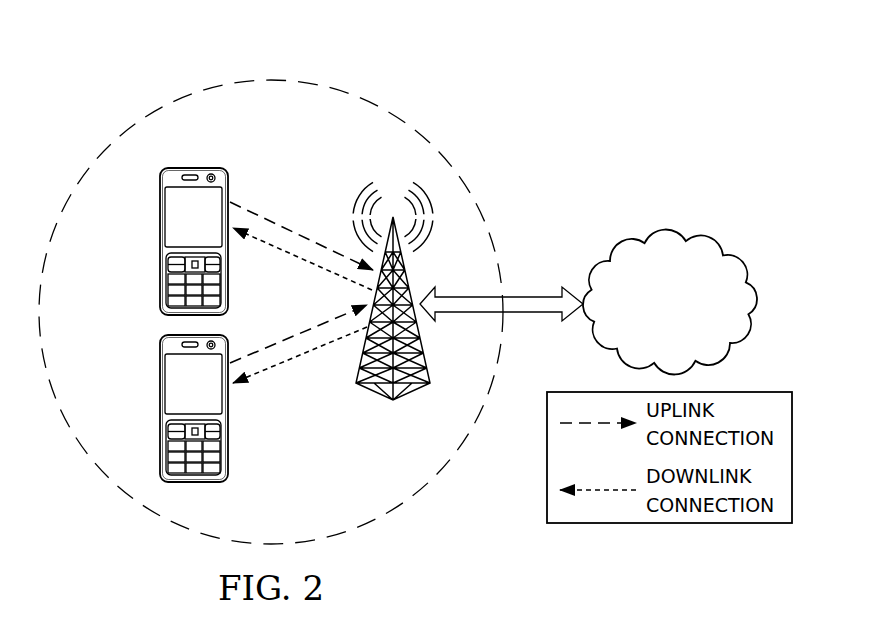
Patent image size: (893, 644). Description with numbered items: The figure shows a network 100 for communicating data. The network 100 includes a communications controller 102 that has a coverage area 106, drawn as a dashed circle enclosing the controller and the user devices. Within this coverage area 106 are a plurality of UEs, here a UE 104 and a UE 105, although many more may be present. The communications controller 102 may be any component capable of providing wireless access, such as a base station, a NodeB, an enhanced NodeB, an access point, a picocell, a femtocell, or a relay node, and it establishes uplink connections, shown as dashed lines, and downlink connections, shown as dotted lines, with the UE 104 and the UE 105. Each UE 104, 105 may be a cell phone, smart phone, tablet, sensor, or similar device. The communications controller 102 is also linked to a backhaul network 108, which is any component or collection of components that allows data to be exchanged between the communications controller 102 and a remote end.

The network 100 is at (574, 86).
The communications controller 102 is at (404, 396).
The UE 104 is at (160, 247).
The UE 105 is at (160, 408).
The coverage area 106 is at (162, 102).
The backhaul network 108 is at (670, 236).